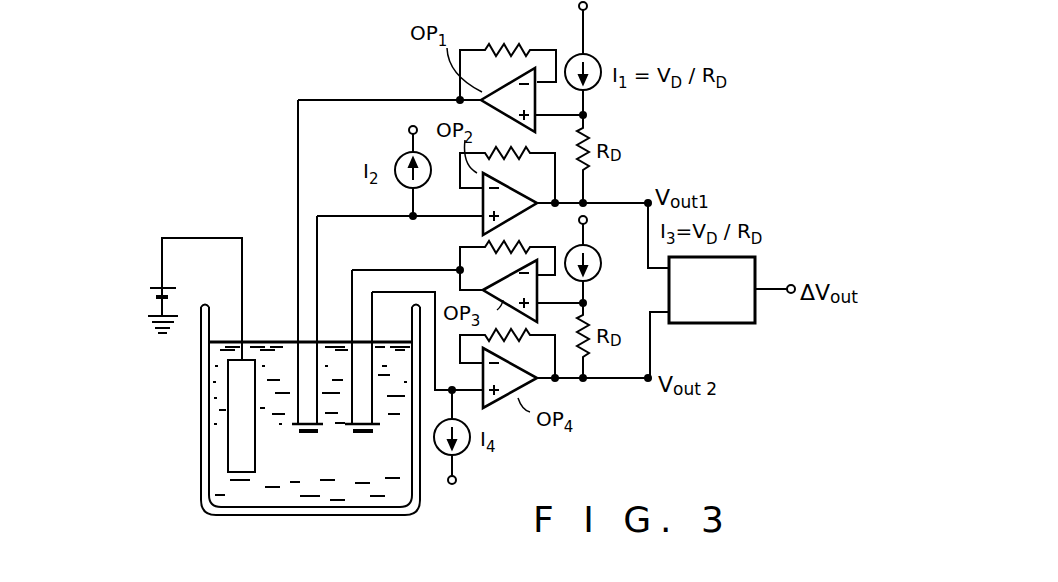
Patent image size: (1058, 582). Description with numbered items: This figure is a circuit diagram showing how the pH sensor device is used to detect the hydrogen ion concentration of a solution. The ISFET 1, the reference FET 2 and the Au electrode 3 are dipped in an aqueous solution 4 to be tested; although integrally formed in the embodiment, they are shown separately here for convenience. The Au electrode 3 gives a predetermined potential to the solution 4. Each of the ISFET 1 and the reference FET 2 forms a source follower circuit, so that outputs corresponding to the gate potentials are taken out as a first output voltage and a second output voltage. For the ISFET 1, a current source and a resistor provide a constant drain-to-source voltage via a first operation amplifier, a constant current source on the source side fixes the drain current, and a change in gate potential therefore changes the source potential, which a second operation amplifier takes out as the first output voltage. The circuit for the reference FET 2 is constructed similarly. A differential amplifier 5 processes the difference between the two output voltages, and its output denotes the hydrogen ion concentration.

The ISFET 1 is at (307, 434).
The reference FET 2 is at (360, 434).
The Au electrode 3 is at (240, 430).
The aqueous solution 4 is at (263, 488).
The differential amplifier 5 is at (720, 323).